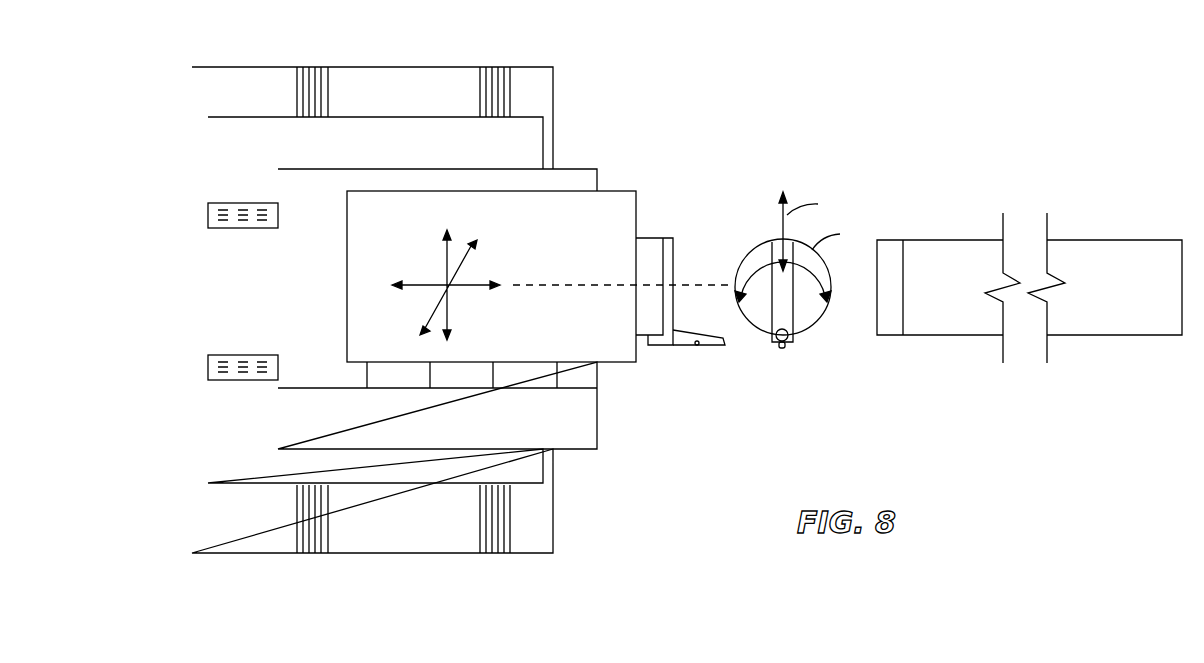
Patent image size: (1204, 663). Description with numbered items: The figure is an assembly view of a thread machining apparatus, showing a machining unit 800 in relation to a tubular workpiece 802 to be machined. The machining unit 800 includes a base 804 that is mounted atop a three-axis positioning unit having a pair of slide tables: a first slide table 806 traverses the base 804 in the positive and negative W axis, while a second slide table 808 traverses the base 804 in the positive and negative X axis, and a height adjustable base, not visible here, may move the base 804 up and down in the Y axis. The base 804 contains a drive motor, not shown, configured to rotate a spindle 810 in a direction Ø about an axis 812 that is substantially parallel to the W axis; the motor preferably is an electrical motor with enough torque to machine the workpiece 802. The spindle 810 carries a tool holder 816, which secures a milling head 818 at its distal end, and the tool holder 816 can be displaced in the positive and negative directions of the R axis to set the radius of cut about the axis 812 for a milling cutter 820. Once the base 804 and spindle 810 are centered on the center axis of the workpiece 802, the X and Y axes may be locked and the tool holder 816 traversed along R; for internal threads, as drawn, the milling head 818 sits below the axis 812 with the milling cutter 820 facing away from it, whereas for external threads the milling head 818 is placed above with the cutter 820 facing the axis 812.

The machining unit 800 is at (988, 147).
The tubular workpiece 802 is at (1090, 240).
The base 804 is at (613, 190).
The first slide table 806 is at (532, 142).
The second slide table 808 is at (227, 67).
The spindle 810 is at (650, 238).
The axis 812 is at (690, 285).
The tool holder 816 is at (785, 315).
The milling head 818 is at (697, 348).
The milling cutter 820 is at (725, 345).